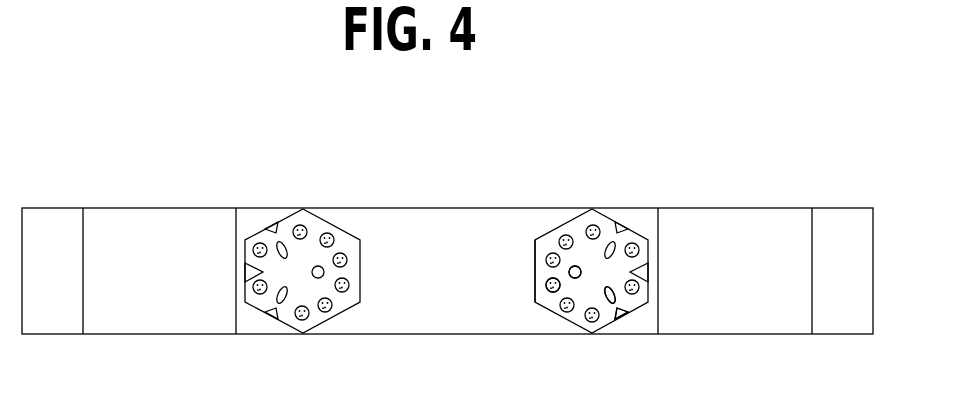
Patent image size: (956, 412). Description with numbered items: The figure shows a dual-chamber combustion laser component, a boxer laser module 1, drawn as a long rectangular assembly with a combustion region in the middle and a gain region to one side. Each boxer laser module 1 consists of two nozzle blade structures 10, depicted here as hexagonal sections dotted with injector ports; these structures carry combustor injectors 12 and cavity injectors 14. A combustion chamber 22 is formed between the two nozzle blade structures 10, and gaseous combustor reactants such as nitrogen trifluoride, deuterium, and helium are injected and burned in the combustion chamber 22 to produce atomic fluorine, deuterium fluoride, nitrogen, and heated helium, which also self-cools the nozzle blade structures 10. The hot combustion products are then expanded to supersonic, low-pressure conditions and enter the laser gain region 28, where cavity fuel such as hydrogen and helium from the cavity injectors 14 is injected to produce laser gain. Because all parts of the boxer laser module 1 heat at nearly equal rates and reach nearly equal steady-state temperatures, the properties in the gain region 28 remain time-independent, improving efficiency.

The boxer laser module 1 is at (120, 140).
The nozzle blade structure 10 is at (307, 250).
The combustor injector 12 is at (577, 279).
The cavity injector 14 is at (637, 295).
The combustion chamber 22 is at (535, 320).
The laser gain region 28 is at (690, 240).